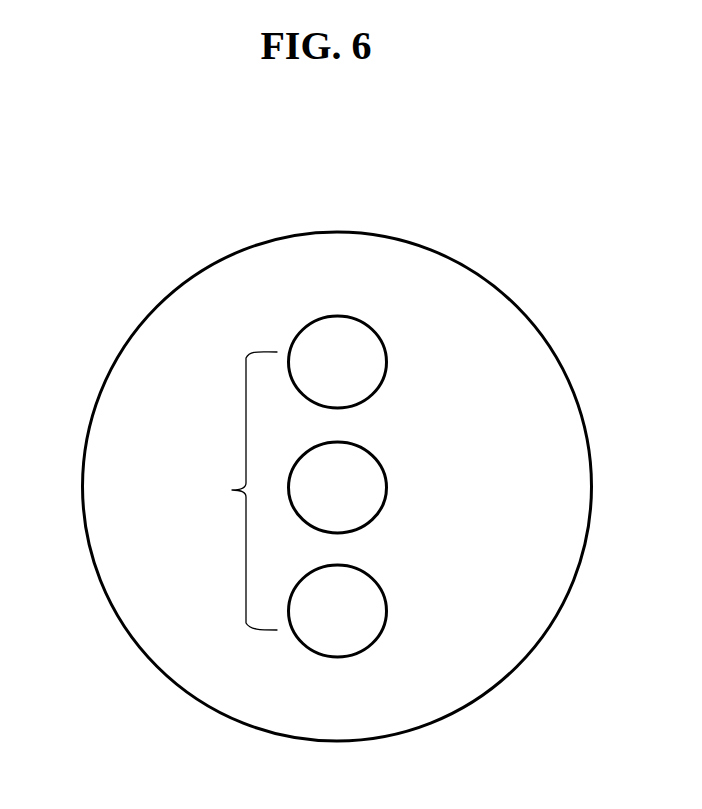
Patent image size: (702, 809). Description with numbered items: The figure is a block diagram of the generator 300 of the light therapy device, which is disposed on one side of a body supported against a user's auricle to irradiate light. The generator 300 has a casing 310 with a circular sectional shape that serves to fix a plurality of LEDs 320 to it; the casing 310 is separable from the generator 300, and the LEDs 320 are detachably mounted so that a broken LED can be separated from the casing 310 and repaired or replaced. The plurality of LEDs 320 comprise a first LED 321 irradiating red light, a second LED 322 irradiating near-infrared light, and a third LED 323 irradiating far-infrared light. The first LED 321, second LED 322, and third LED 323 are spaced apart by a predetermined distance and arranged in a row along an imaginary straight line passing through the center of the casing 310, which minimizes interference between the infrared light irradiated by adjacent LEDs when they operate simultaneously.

The generator 300 is at (104, 223).
The casing 310 is at (467, 264).
The plurality of LEDs 320 is at (232, 490).
The first LED 321 is at (387, 362).
The second LED 322 is at (387, 485).
The third LED 323 is at (387, 605).